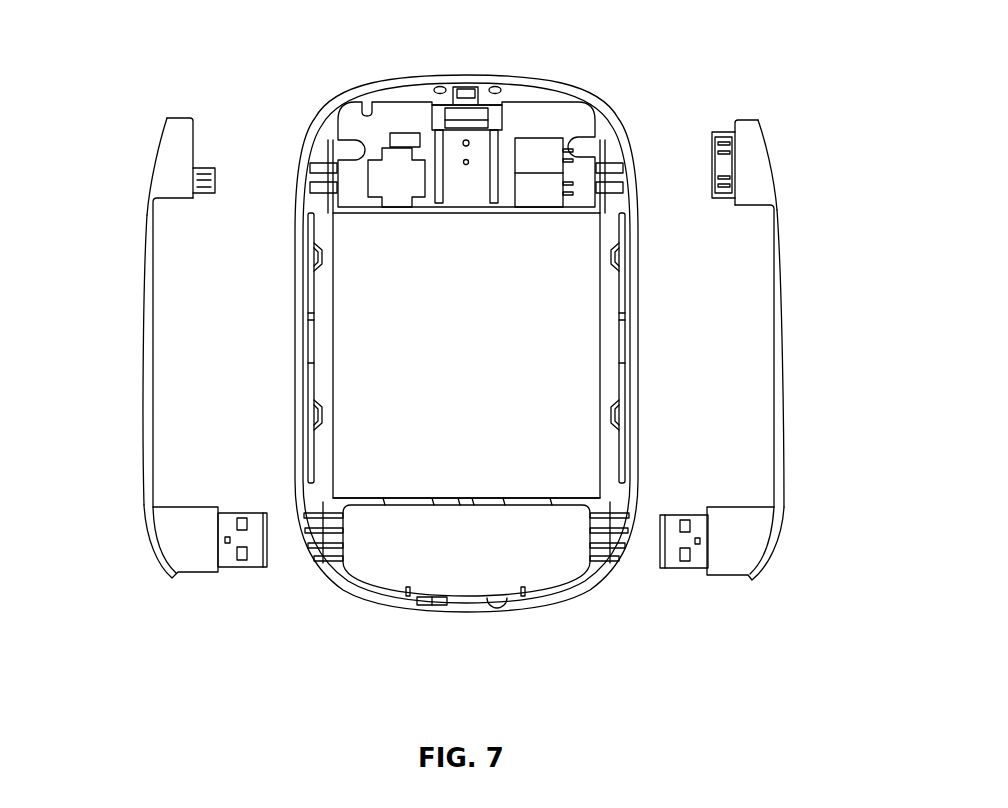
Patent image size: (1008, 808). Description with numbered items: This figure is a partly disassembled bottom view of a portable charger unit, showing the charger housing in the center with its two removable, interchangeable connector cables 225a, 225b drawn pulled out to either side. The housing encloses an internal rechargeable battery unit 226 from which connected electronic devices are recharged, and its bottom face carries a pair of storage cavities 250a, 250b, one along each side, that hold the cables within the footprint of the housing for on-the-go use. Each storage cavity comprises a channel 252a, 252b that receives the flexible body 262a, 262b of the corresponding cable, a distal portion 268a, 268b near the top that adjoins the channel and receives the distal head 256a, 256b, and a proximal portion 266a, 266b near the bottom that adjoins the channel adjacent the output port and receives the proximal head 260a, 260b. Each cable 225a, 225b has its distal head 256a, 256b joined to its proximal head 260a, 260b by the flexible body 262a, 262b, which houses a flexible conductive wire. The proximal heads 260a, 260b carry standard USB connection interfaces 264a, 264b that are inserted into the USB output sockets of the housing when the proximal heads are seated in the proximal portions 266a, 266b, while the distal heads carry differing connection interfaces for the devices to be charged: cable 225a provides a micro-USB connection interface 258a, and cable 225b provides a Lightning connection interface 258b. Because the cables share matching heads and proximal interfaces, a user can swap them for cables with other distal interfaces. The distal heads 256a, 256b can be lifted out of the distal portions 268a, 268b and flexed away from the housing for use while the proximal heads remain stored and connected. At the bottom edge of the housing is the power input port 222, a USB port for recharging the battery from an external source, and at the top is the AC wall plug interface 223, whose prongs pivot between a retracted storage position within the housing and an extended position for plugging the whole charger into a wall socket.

The power input port 222 is at (433, 604).
The AC wall plug interface 223 is at (494, 110).
The connector cable 225a is at (162, 354).
The connector cable 225b is at (766, 348).
The internal rechargeable battery unit 226 is at (428, 373).
The storage cavity 250a is at (274, 354).
The storage cavity 250b is at (665, 356).
The channel 252a is at (320, 365).
The channel 252b is at (612, 337).
The distal head 256a is at (181, 117).
The distal head 256b is at (751, 118).
The micro-USB connection interface 258a is at (206, 167).
The Lightning connection interface 258b is at (717, 133).
The proximal head 260a is at (175, 580).
The proximal head 260b is at (733, 578).
The flexible body 262a is at (143, 330).
The flexible body 262b is at (788, 410).
The USB connection interface 264a is at (253, 557).
The USB connection interface 264b is at (692, 560).
The proximal portion 266a is at (357, 593).
The proximal portion 266b is at (565, 597).
The distal portion 268a is at (322, 173).
The distal portion 268b is at (611, 173).